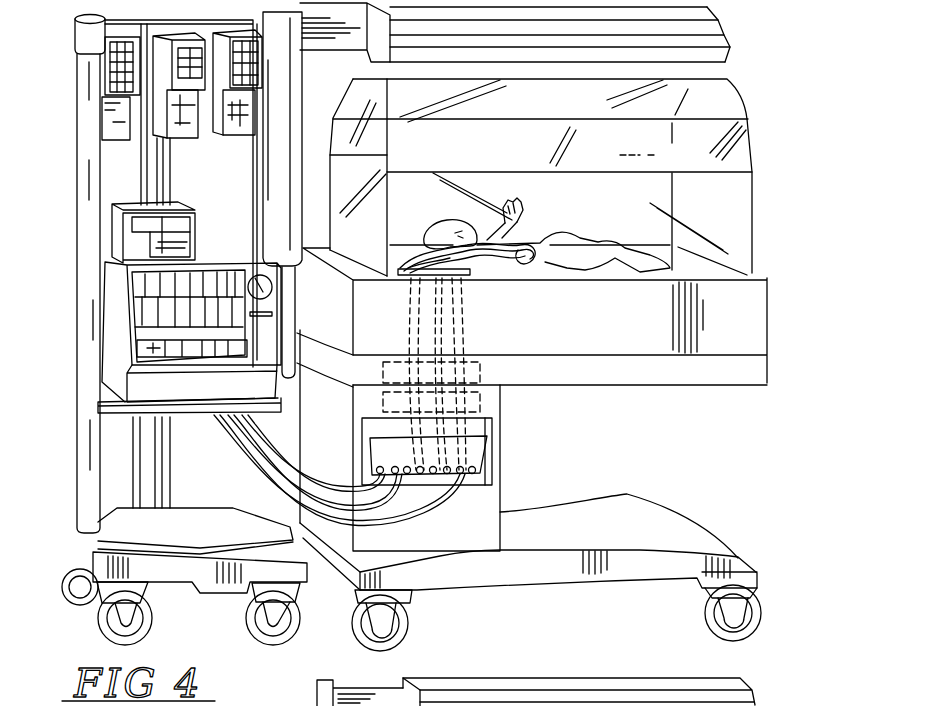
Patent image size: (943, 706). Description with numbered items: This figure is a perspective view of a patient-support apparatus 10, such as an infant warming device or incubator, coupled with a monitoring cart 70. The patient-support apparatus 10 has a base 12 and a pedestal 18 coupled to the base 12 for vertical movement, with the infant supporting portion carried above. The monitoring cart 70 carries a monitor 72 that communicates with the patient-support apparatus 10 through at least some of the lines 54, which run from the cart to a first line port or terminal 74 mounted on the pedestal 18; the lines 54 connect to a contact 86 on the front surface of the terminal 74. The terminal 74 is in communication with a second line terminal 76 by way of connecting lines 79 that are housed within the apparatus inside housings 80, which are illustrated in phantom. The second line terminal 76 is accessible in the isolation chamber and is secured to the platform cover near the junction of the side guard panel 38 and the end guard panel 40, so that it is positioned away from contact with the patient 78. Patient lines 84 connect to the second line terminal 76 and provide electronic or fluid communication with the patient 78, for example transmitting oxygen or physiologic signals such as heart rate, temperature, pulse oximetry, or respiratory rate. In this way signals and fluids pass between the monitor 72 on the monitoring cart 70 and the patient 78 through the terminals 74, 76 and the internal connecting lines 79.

The patient-support apparatus 10 is at (738, 31).
The base 12 is at (670, 535).
The pedestal 18 is at (477, 507).
The side guard panel 38 is at (620, 193).
The end guard panel 40 is at (342, 208).
The lines 54 is at (251, 450).
The monitoring cart 70 is at (65, 374).
The monitor 72 is at (147, 388).
The first line port or terminal 74 is at (485, 442).
The second line terminal 76 is at (462, 282).
The patient 78 is at (580, 253).
The connecting lines 79 is at (480, 340).
The housings 80 is at (476, 321).
The patient lines 84 is at (513, 240).
The contact 86 is at (477, 467).